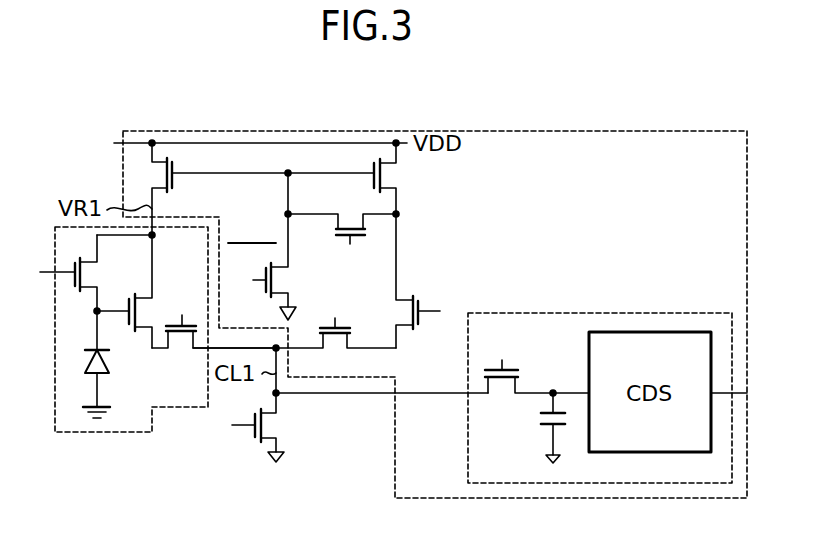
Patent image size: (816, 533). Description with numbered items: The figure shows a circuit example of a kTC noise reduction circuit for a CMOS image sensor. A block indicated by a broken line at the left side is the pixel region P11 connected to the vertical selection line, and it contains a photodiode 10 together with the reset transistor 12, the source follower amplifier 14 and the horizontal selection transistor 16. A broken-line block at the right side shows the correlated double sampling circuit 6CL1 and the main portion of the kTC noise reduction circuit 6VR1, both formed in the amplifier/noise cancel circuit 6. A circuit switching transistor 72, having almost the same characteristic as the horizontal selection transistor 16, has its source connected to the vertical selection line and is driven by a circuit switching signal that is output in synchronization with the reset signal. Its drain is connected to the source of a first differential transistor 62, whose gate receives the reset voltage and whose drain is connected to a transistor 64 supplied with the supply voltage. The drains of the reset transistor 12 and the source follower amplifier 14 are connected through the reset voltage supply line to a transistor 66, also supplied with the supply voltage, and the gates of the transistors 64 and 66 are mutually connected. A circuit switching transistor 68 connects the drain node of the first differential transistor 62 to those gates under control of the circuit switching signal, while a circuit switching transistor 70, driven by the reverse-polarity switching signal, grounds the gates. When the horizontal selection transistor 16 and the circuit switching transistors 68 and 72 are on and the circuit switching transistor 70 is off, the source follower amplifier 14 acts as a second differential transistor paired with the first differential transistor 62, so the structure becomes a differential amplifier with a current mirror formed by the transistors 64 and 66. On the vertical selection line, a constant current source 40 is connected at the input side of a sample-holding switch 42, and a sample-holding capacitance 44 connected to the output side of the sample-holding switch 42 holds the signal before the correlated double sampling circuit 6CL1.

The amplifier/noise cancel circuit 6 is at (500, 129).
The kTC noise reduction circuit 6VR1 is at (432, 223).
The CDS circuit 6CL1 is at (608, 312).
The pixel region P11 is at (100, 433).
The photodiode 10 is at (83, 362).
The reset transistor 12 is at (80, 293).
The source follower amplifier 14 is at (135, 297).
The horizontal selection transistor 16 is at (180, 350).
The constant current source 40 is at (283, 426).
The sample-holding switch 42 is at (503, 396).
The sample-holding capacitance 44 is at (540, 423).
The first differential transistor 62 is at (418, 298).
The transistor 64 is at (390, 175).
The transistor 66 is at (148, 175).
The circuit switching transistor 68 is at (345, 219).
The circuit switching transistor 70 is at (283, 283).
The circuit switching transistor 72 is at (335, 350).